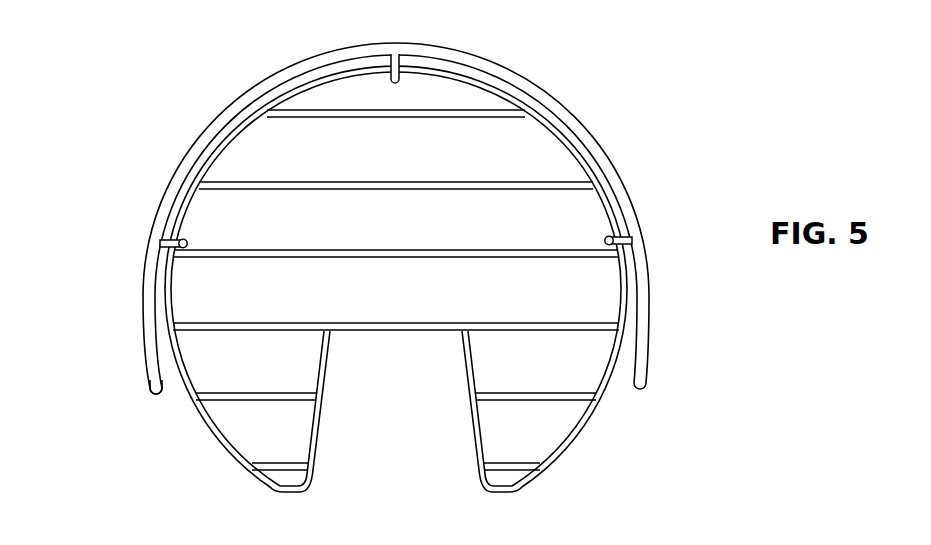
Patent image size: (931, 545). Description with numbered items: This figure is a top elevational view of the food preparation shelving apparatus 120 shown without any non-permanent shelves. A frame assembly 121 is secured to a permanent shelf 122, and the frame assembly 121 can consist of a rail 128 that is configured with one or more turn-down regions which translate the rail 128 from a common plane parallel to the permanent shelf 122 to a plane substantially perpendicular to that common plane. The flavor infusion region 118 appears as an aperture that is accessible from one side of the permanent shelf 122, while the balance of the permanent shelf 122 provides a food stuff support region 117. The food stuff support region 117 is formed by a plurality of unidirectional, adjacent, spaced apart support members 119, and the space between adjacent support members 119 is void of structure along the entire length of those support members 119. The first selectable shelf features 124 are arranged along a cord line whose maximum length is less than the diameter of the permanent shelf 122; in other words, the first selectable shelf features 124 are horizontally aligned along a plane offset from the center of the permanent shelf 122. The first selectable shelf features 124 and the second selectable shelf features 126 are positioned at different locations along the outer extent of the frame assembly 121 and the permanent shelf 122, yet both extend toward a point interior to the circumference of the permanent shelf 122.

The food stuff support region 117 is at (530, 142).
The flavor infusion region 118 is at (413, 470).
The support members 119 is at (585, 326).
The food preparation shelving apparatus 120 is at (418, 280).
The frame assembly 121 is at (658, 249).
The permanent shelf 122 is at (607, 397).
The first selectable shelf features 124 is at (243, 232).
The second selectable shelf features 126 is at (392, 92).
The rail 128 is at (152, 387).